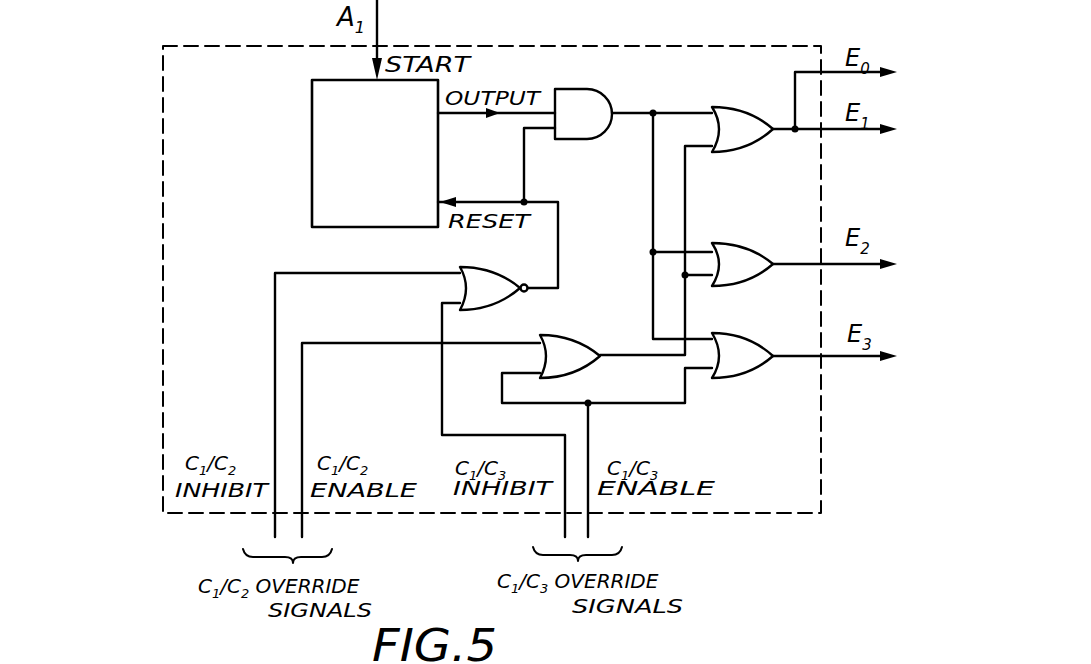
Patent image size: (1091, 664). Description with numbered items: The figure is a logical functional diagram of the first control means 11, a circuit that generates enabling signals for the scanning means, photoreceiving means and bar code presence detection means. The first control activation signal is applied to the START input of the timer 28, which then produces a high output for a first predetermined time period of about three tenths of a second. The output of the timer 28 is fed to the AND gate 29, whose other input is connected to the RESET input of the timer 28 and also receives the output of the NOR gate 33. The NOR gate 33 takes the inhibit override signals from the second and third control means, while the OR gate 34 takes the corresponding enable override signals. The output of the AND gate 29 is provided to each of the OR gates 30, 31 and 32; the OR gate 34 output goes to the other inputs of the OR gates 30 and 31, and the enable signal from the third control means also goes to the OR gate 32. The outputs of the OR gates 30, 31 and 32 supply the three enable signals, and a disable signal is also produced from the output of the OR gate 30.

The first control means 11 is at (162, 121).
The timer 28 is at (312, 207).
The AND gate 29 is at (600, 100).
The OR gate 30 is at (752, 94).
The OR gate 31 is at (742, 243).
The OR gate 32 is at (752, 333).
The NOR gate 33 is at (493, 268).
The OR gate 34 is at (584, 337).